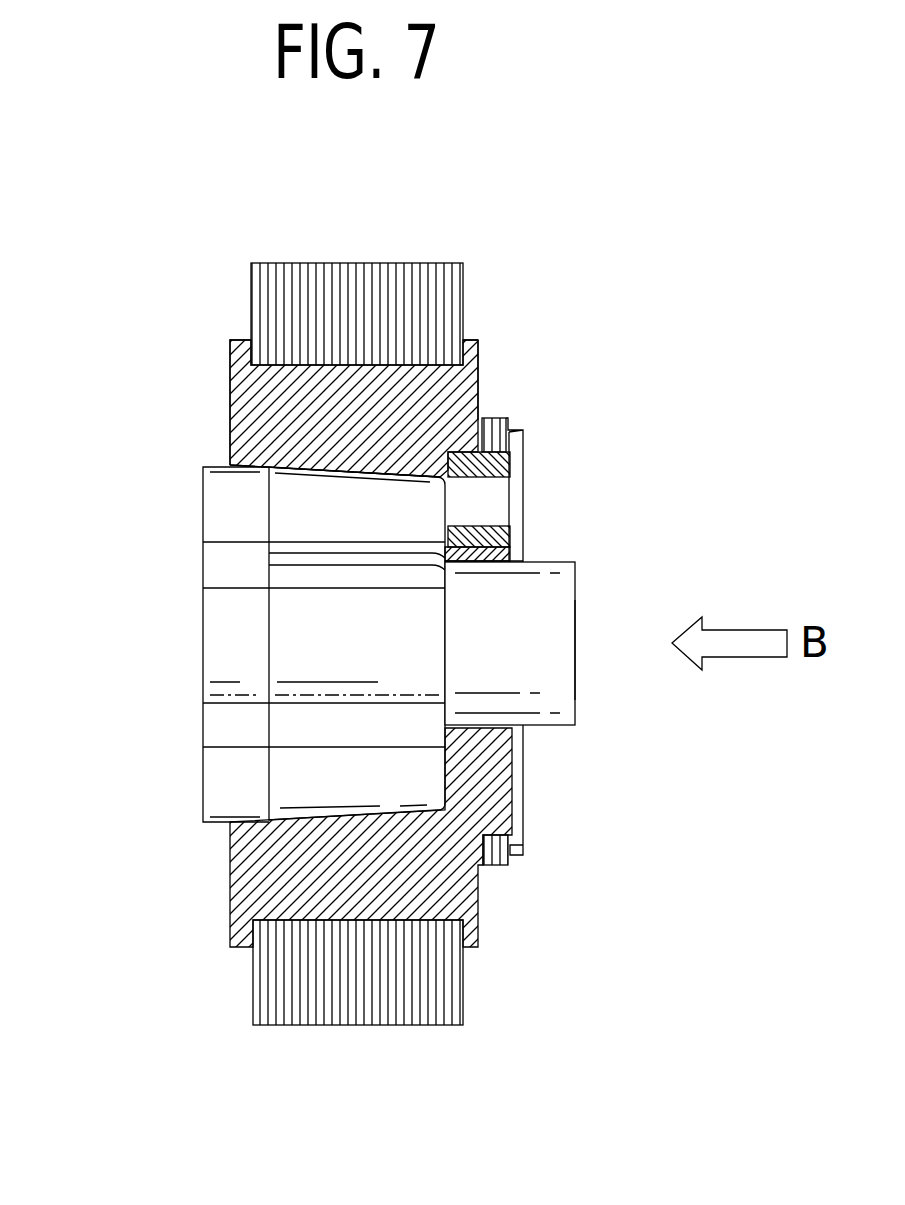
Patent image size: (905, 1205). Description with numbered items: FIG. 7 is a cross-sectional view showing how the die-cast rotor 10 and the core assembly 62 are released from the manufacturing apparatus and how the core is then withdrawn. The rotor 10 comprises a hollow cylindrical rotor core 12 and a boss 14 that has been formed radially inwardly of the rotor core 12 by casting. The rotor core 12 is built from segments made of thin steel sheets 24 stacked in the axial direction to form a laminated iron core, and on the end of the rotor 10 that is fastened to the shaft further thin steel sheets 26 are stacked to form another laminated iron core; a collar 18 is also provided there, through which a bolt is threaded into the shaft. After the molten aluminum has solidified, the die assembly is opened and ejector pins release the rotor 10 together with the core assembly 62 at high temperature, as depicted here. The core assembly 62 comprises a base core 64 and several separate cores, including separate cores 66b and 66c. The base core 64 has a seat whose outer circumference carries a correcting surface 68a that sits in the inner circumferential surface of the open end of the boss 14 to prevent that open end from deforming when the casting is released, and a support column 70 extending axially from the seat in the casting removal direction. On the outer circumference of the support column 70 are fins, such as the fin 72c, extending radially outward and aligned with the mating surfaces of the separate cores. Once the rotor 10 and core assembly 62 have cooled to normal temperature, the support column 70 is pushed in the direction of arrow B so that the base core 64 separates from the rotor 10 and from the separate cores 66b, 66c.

The rotor 10 is at (707, 240).
The rotor core 12 is at (476, 304).
The boss 14 is at (229, 897).
The collar 18 is at (470, 563).
The thin steel sheets 24 is at (318, 263).
The thin steel sheets 26 is at (495, 867).
The core assembly 62 is at (358, 470).
The base core 64 is at (582, 602).
The separate core 66b is at (296, 491).
The separate core 66c is at (308, 770).
The correcting surface 68a is at (235, 515).
The support column 70 is at (577, 690).
The fin 72c is at (337, 562).